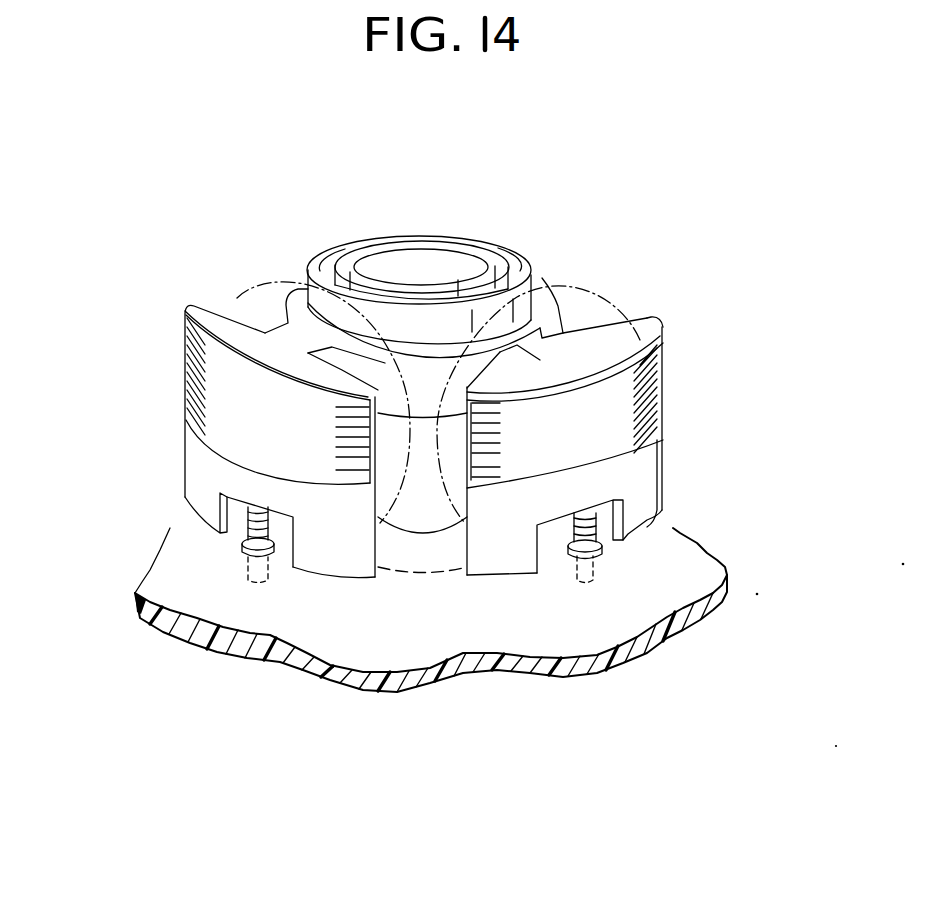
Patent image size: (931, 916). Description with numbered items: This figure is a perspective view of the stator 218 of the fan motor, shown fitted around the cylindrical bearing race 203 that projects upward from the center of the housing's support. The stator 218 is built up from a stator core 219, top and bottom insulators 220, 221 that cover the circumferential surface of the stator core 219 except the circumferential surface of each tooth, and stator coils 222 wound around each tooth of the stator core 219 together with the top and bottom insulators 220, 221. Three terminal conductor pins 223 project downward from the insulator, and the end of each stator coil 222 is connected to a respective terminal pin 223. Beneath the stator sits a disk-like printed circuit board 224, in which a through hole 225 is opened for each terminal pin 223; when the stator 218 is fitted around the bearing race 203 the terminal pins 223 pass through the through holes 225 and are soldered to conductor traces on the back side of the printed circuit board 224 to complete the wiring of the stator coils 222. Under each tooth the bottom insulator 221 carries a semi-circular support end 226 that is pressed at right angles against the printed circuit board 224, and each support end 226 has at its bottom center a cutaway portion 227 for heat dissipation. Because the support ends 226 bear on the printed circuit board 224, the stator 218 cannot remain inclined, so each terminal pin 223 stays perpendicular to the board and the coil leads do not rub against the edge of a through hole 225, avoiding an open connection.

The bearing race 203 is at (377, 236).
The stator 218 is at (290, 278).
The stator core 219 is at (607, 427).
The top insulator 220 is at (540, 328).
The bottom insulator 221 is at (198, 455).
The stator coil 222 is at (237, 298).
The terminal conductor pin 223 is at (257, 583).
The printed circuit board 224 is at (620, 675).
The through hole 225 is at (267, 563).
The semi-circular support end 226 is at (200, 503).
The cutaway portion 227 is at (640, 534).